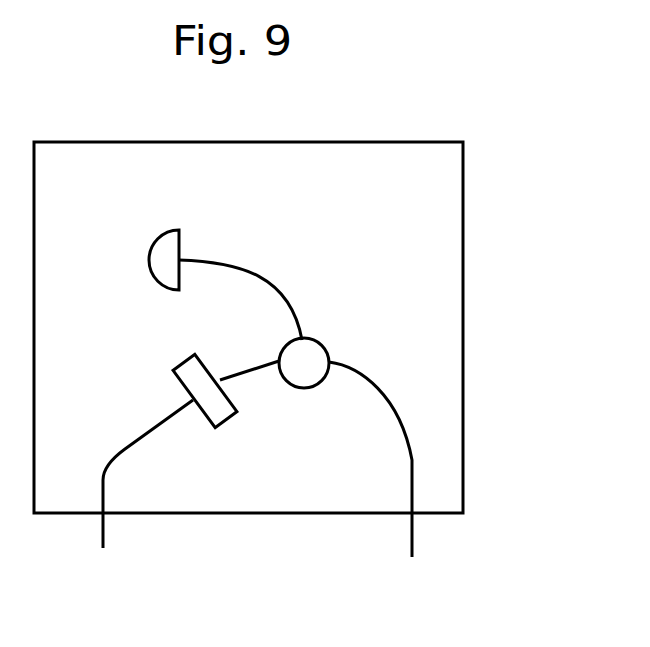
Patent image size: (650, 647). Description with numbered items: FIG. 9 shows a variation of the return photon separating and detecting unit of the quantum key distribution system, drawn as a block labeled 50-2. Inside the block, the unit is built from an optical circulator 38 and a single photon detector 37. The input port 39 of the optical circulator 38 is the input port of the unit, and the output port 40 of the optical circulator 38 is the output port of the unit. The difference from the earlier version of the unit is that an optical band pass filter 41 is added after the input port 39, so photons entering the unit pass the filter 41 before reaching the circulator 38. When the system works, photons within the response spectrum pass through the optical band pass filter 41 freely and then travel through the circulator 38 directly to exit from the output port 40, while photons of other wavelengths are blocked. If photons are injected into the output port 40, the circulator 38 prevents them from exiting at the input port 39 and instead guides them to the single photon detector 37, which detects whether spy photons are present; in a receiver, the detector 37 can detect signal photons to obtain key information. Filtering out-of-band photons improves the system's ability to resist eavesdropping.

The single photon detector 37 is at (225, 250).
The optical circulator 38 is at (343, 334).
The input port 39 is at (141, 506).
The output port 40 is at (385, 490).
The optical band pass filter 41 is at (226, 421).
The optical unit housing 50-2 is at (338, 327).